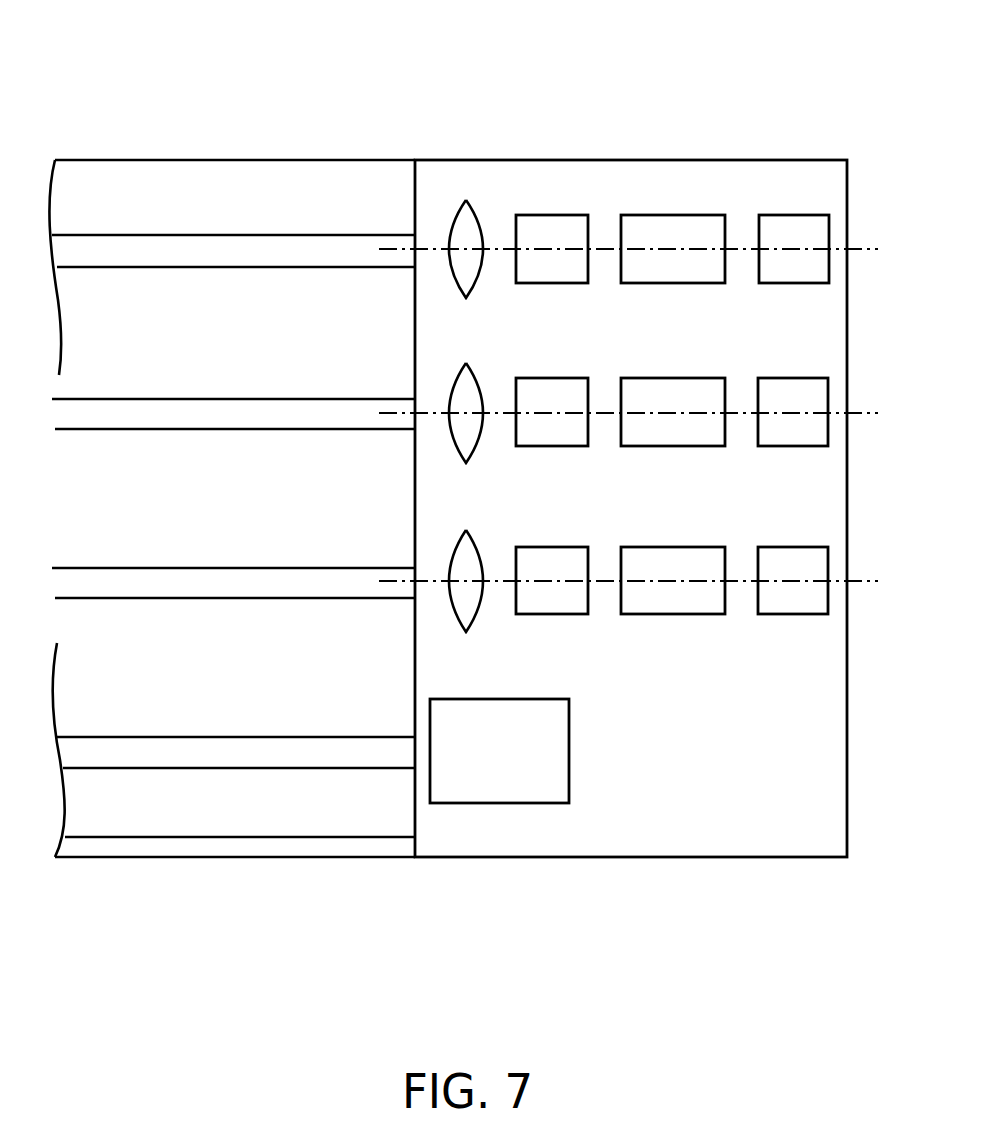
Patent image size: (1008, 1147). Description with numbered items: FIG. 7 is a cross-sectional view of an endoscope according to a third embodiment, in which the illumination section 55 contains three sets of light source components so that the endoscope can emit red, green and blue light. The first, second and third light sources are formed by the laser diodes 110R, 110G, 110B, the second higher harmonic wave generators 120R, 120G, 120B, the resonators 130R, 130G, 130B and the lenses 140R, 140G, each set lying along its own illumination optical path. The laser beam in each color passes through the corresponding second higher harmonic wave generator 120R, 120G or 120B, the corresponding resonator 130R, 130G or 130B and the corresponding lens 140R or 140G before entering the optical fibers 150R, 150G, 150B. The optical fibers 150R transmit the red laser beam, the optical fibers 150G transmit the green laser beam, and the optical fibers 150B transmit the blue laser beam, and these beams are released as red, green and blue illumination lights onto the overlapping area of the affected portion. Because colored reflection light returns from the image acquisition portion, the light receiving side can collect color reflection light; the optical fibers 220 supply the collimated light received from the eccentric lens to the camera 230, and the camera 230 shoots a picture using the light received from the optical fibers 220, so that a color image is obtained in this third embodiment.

The light guide plate 55 is at (125, 160).
The laser diode 110R is at (799, 215).
The laser diode 110G is at (796, 378).
The laser diode 110B is at (796, 547).
The second higher harmonic wave generator 120R is at (678, 215).
The second higher harmonic wave generator 120G is at (673, 378).
The second higher harmonic wave generator 120B is at (673, 547).
The resonator 130R is at (558, 215).
The resonator 130G is at (554, 378).
The resonator 130B is at (554, 547).
The lens 140R is at (466, 200).
The lens 140G is at (466, 363).
The optical fibers 150R is at (312, 235).
The optical fibers 150G is at (312, 399).
The optical fibers 150B is at (312, 568).
The optical fibers 220 is at (313, 768).
The camera 230 is at (467, 803).